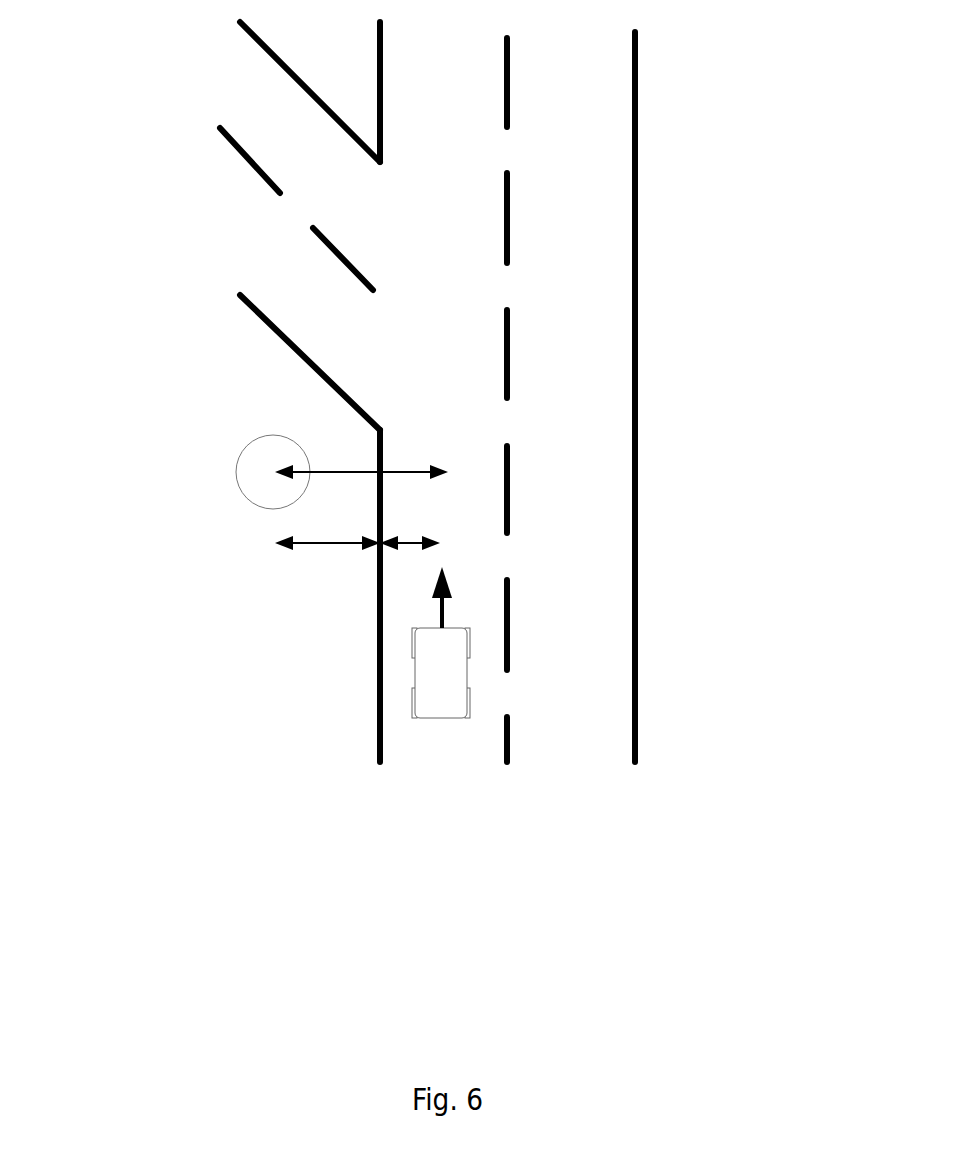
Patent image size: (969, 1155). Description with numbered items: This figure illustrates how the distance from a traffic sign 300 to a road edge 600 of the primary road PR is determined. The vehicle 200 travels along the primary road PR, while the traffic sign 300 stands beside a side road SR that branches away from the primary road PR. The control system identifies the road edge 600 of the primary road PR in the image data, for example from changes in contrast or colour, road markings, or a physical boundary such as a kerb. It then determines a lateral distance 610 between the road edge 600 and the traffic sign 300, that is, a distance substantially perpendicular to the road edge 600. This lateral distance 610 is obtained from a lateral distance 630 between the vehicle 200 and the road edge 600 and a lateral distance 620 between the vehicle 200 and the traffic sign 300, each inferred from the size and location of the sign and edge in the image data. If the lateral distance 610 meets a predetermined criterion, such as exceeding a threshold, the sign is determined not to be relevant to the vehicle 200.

The side road SR is at (272, 247).
The primary road PR is at (572, 608).
The vehicle 200 is at (420, 688).
The traffic sign 300 is at (245, 460).
The road edge 600 is at (377, 633).
The lateral distance 610 is at (340, 545).
The lateral distance 620 is at (335, 470).
The lateral distance 630 is at (428, 542).